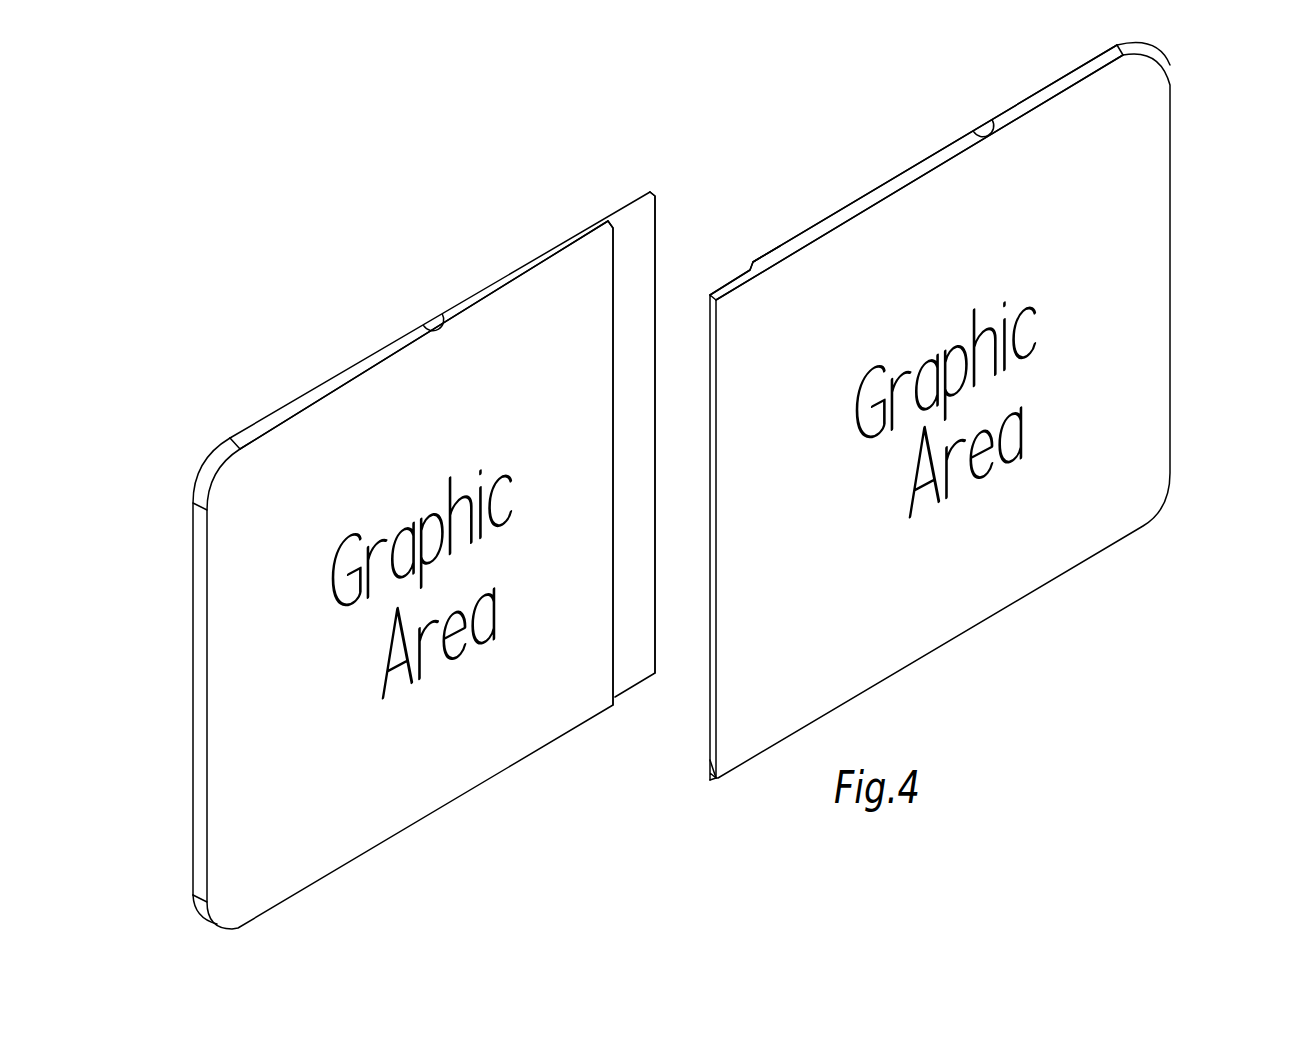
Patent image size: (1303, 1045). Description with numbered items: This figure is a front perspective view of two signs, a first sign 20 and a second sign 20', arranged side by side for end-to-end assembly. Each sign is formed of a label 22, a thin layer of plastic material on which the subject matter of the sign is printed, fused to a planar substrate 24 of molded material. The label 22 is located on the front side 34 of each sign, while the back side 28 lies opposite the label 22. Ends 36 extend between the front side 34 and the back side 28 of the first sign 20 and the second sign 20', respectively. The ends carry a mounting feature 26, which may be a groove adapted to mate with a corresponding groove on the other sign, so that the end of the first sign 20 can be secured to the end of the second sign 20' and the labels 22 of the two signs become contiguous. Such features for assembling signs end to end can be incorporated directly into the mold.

The first sign 20 is at (384, 575).
The second sign 20' is at (993, 412).
The label 22 is at (235, 698).
The planar substrate 24 is at (322, 391).
The mounting feature 26 is at (652, 223).
The back side 28 is at (467, 302).
The front side 34 is at (432, 337).
The ends 36 is at (651, 192).